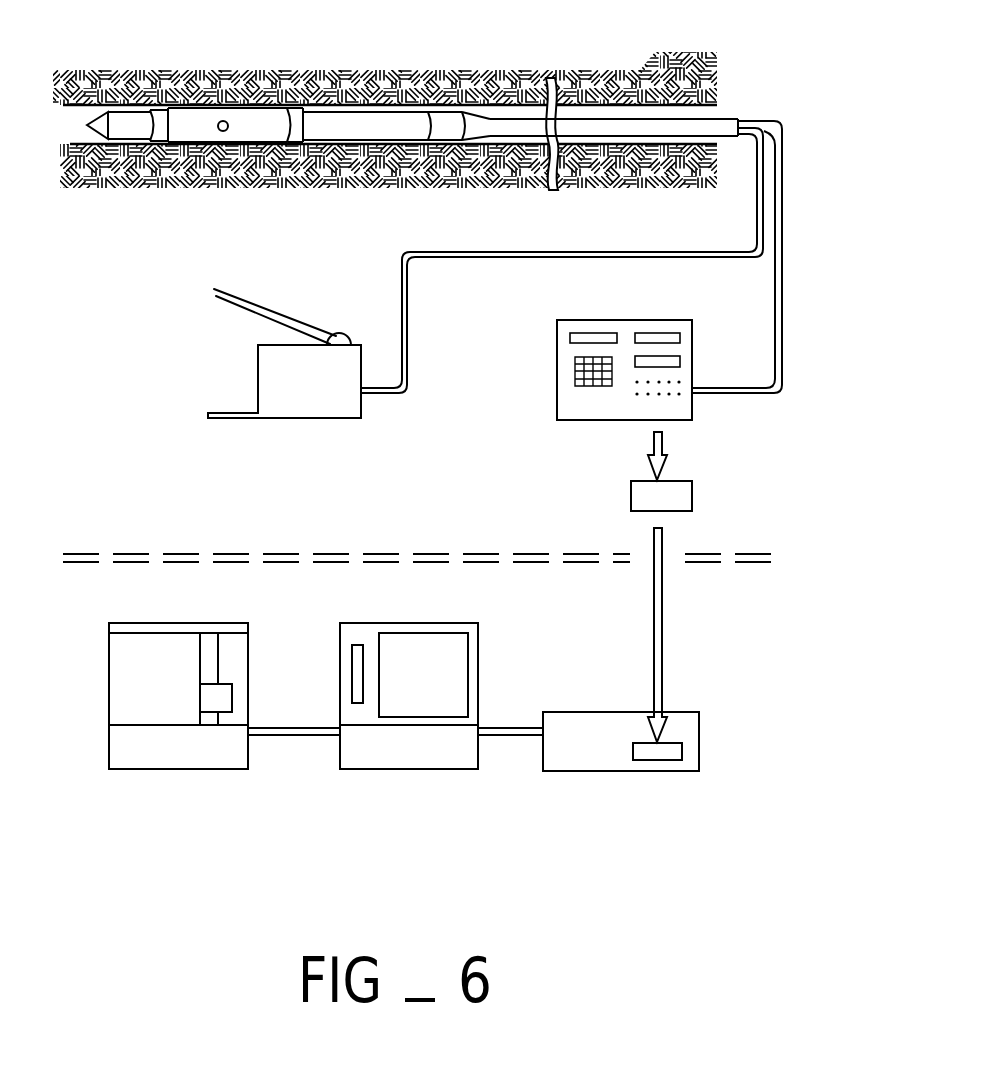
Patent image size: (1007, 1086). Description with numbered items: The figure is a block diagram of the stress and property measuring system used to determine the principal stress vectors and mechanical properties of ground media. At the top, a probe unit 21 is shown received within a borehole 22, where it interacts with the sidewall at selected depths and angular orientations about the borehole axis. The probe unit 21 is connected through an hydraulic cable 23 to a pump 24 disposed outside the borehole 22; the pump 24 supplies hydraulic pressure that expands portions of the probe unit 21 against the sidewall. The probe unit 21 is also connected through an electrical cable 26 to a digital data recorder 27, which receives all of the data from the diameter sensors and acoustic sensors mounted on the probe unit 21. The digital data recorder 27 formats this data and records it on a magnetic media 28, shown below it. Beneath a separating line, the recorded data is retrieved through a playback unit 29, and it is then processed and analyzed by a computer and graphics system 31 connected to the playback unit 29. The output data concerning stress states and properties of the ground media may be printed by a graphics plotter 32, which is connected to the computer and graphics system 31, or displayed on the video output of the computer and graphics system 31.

The probe unit 21 is at (363, 120).
The borehole 22 is at (637, 115).
The hydraulic cable 23 is at (513, 252).
The pump 24 is at (258, 377).
The electrical cable 26 is at (775, 297).
The digital data recorder 27 is at (557, 362).
The magnetic media 28 is at (631, 505).
The playback unit 29 is at (643, 762).
The computer and graphics system 31 is at (408, 771).
The graphics plotter 32 is at (190, 771).